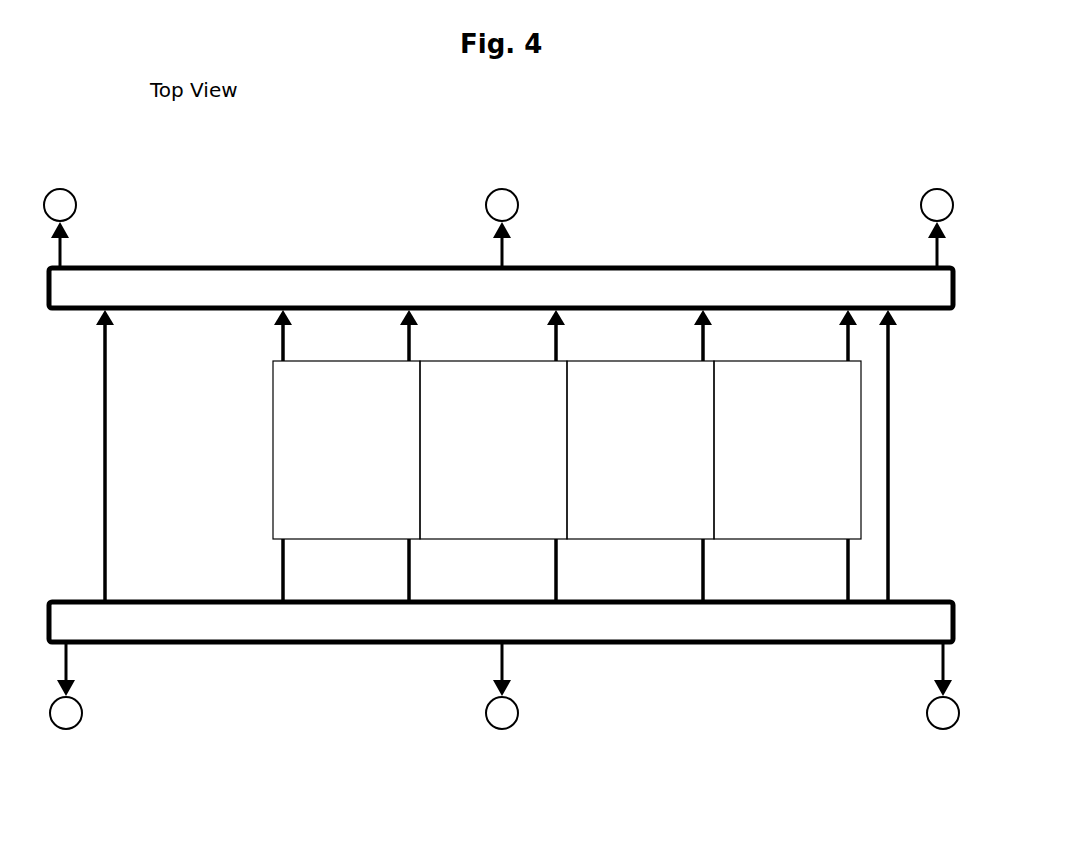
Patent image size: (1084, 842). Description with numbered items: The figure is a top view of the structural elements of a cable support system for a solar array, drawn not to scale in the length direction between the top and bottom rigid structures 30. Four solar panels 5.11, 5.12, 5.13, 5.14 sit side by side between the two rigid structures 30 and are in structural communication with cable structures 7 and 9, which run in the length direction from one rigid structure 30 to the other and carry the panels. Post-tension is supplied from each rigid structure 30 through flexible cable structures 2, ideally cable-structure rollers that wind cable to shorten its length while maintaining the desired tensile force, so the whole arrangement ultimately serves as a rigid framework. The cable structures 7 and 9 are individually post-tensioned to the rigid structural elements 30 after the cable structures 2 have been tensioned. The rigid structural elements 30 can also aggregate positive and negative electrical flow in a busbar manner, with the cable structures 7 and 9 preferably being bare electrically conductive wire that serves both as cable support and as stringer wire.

The flexible cable structure 2 is at (501, 459).
The rigid structure 30 is at (501, 455).
The cable structure 7 is at (502, 456).
The cable structure 9 is at (571, 456).
The solar panel 5.11 is at (346, 450).
The solar panel 5.12 is at (493, 450).
The solar panel 5.13 is at (640, 450).
The solar panel 5.14 is at (787, 450).